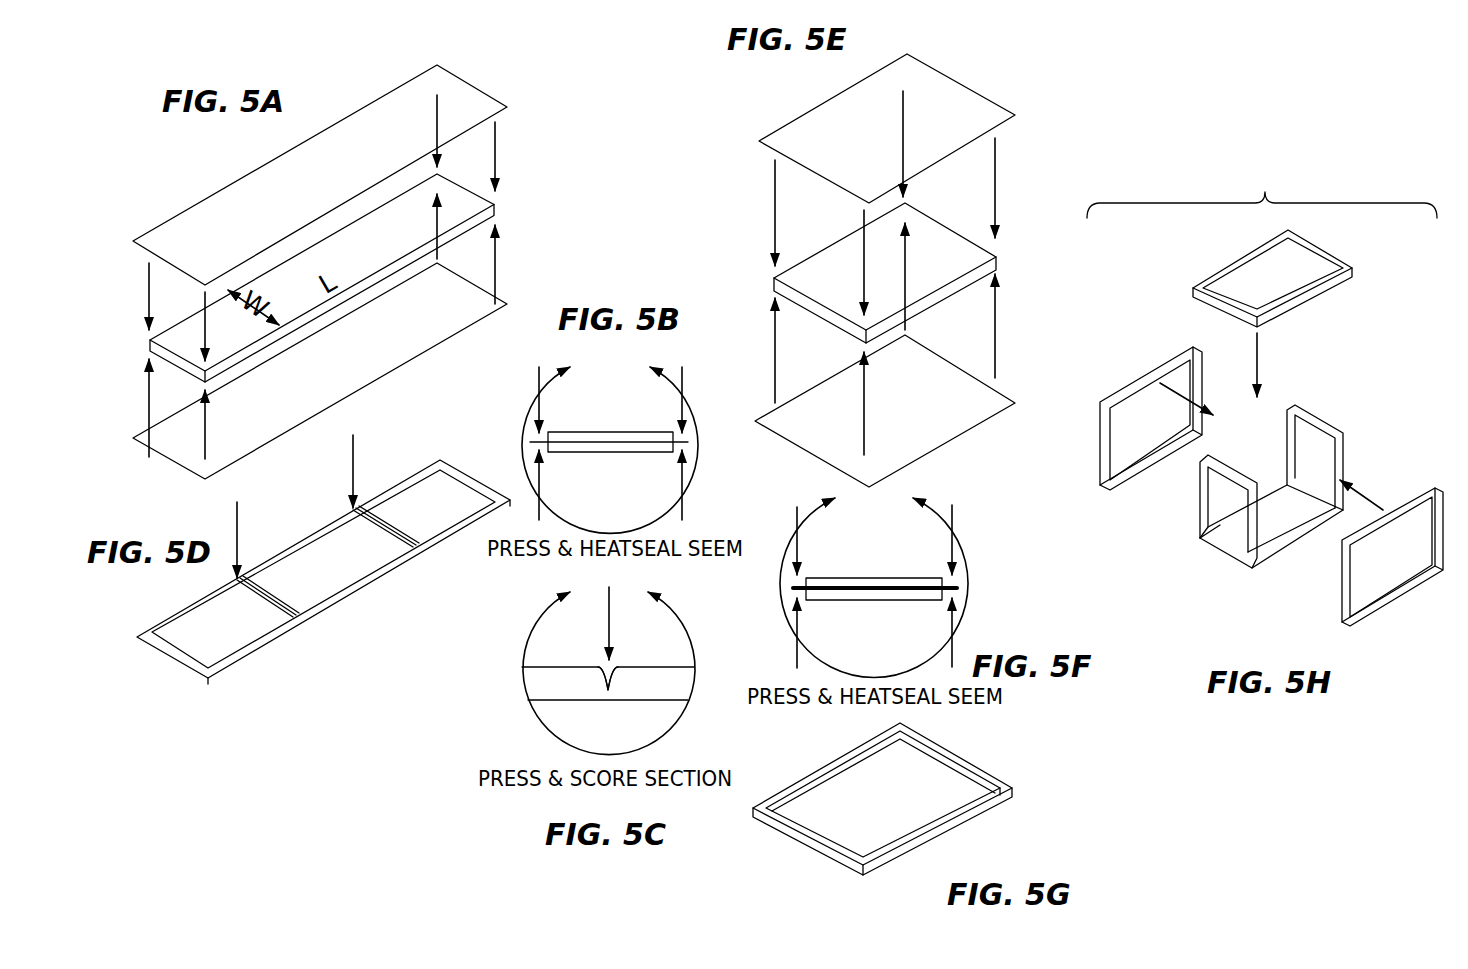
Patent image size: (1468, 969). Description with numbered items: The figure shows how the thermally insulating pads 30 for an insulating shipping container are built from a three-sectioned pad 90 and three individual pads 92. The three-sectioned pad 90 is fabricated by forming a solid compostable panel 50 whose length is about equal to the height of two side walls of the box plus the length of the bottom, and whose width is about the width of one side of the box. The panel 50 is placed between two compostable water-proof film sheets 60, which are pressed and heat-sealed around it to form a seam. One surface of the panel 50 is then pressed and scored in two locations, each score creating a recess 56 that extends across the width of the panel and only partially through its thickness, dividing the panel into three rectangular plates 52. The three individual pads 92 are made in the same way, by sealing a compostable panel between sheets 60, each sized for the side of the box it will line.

In FIG. 5H, the thermally insulating pads 30 is at (1262, 188).
In FIG. 5A, the solid compostable panel 50 is at (202, 352).
In FIG. 5B, the solid compostable panel 50 is at (640, 432).
In FIG. 5E, the solid compostable panel 50 is at (940, 257).
In FIG. 5F, the solid compostable panel 50 is at (923, 577).
In FIG. 5D, the rectangular plate 52 is at (216, 634).
In FIG. 5C, the rectangular plate 52 is at (567, 683).
In FIG. 5D, the recess 56 is at (393, 555).
In FIG. 5C, the recess 56 is at (607, 666).
In FIG. 5A, the sheets 60 is at (246, 208).
In FIG. 5B, the sheets 60 is at (687, 437).
In FIG. 5E, the sheets 60 is at (955, 139).
In FIG. 5F, the sheets 60 is at (963, 588).
In FIG. 5D, the three-sectioned pad 90 is at (255, 647).
In FIG. 5H, the three-sectioned pad 90 is at (1343, 463).
In FIG. 5G, the individual pads 92 is at (973, 817).
In FIG. 5H, the individual pads 92 is at (1305, 278).